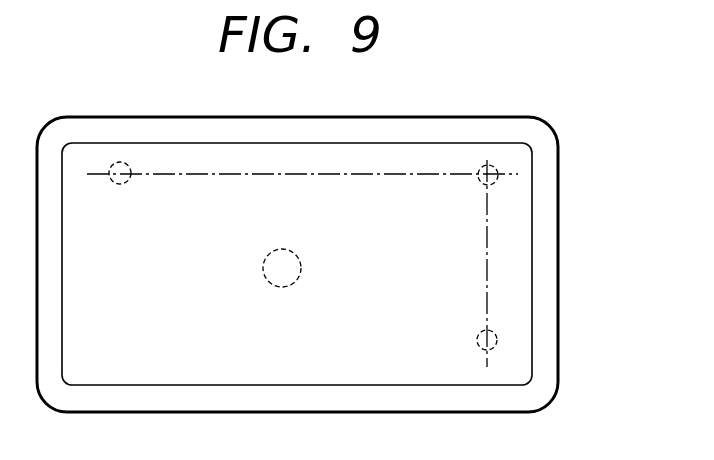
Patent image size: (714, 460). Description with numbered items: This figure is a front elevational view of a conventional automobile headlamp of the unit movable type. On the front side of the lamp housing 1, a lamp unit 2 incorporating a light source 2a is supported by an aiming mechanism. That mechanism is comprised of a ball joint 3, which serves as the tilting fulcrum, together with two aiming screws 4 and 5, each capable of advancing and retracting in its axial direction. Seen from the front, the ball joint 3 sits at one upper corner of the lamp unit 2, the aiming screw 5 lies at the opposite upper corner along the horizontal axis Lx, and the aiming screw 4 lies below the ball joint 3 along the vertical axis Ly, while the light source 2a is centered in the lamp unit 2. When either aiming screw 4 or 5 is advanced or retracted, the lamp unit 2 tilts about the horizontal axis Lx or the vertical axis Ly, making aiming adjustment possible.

The lamp housing 1 is at (502, 117).
The lamp unit 2 is at (533, 215).
The light source 2a is at (288, 288).
The ball joint 3 is at (498, 166).
The aiming screw 4 is at (498, 337).
The aiming screw 5 is at (118, 163).
The horizontal axis Lx is at (275, 173).
The vertical axis Ly is at (487, 268).